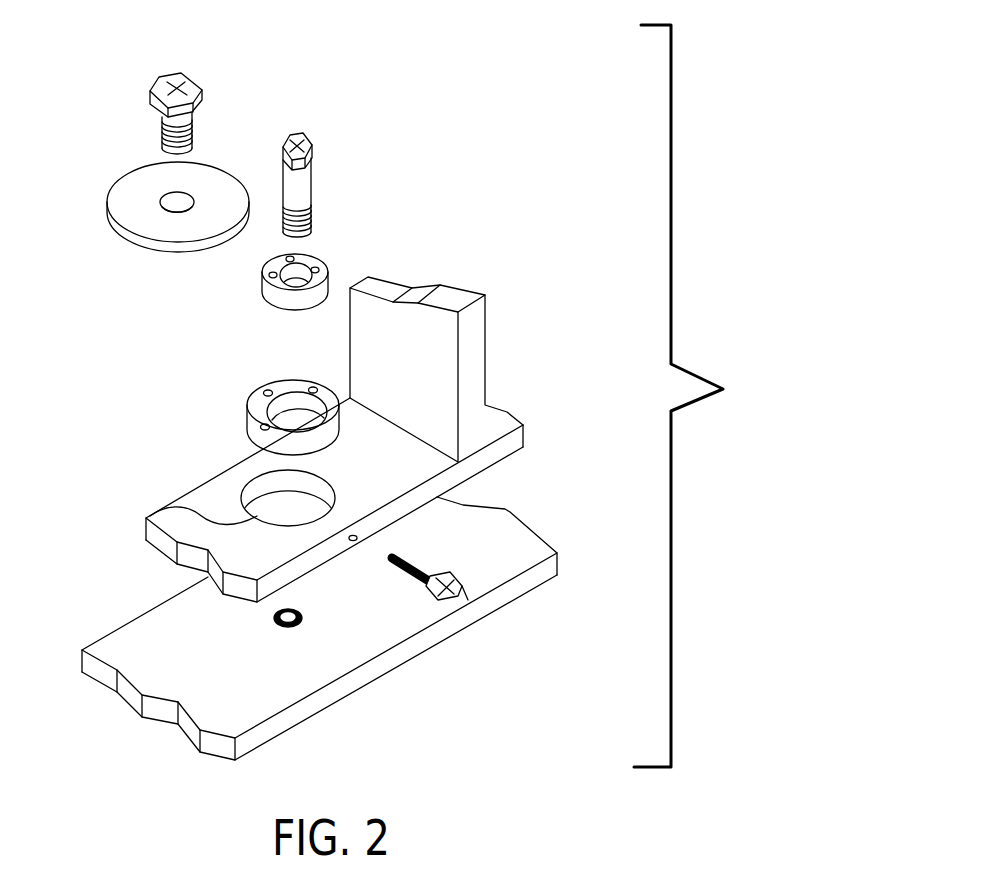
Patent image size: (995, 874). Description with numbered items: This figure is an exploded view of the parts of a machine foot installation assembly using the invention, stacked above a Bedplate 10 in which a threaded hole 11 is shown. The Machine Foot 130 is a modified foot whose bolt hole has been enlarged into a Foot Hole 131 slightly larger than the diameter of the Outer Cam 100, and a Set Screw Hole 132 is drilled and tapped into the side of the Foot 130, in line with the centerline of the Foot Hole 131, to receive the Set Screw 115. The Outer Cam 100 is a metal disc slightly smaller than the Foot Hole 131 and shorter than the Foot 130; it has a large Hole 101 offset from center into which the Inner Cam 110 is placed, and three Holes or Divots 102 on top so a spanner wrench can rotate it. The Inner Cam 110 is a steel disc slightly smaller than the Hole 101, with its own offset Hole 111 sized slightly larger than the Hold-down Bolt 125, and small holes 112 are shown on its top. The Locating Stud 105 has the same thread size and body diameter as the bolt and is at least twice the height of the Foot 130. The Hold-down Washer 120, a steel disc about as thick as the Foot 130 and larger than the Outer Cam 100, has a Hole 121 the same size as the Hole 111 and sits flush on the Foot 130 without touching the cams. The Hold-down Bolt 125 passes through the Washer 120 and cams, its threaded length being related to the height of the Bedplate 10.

The bedplate 10 is at (510, 508).
The threaded hole 11 is at (278, 626).
The outer cam 100 is at (268, 385).
The hole 101 is at (313, 413).
The holes or divots 102 is at (264, 393).
The locating stud 105 is at (313, 177).
The inner cam 110 is at (330, 263).
The hole 111 is at (277, 302).
The small holes of nut 112 is at (286, 259).
The set screw 115 is at (432, 590).
The hold-down washer 120 is at (133, 250).
The hole 121 is at (162, 203).
The hold-down bolt 125 is at (197, 83).
The machine foot 130 is at (490, 350).
The foot hole 131 is at (172, 509).
The set screw hole 132 is at (348, 540).